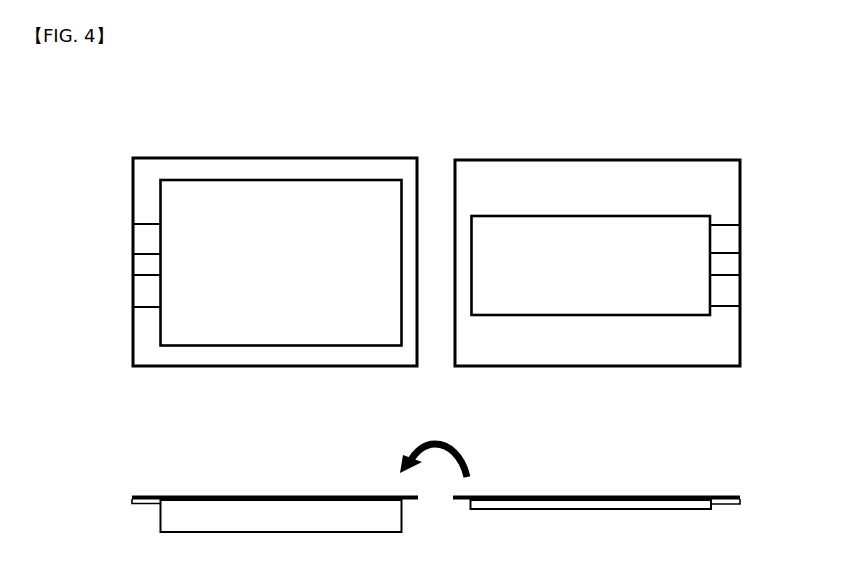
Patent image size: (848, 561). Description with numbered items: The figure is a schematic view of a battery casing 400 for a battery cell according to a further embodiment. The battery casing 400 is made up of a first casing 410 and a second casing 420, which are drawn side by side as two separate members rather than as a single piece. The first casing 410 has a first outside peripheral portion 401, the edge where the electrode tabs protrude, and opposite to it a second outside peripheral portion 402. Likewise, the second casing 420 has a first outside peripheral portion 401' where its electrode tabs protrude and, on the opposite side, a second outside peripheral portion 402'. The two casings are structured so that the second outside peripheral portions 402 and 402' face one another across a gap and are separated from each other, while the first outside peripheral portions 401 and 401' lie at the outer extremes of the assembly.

The battery casing 400 is at (88, 119).
The first casing 410 is at (98, 141).
The second casing 420 is at (760, 138).
The first outside peripheral portion 401 is at (117, 250).
The second outside peripheral portion 402 is at (295, 301).
The first outside peripheral portion 401' is at (755, 253).
The second outside peripheral portion 402' is at (576, 214).